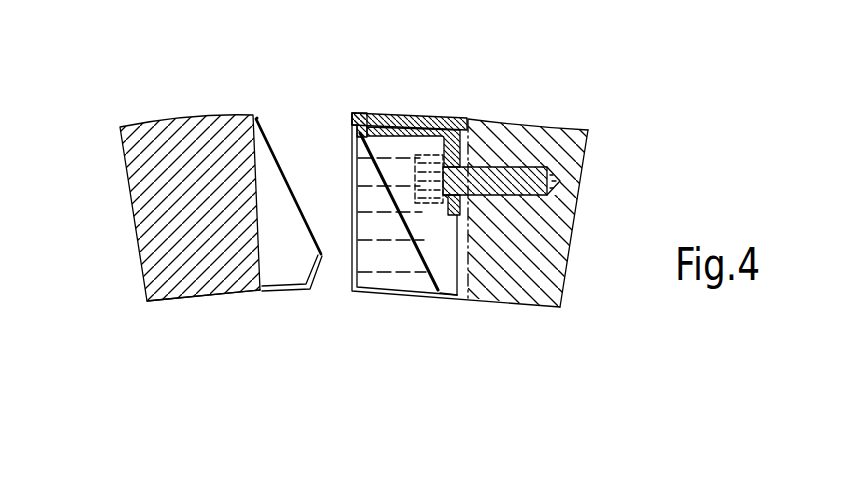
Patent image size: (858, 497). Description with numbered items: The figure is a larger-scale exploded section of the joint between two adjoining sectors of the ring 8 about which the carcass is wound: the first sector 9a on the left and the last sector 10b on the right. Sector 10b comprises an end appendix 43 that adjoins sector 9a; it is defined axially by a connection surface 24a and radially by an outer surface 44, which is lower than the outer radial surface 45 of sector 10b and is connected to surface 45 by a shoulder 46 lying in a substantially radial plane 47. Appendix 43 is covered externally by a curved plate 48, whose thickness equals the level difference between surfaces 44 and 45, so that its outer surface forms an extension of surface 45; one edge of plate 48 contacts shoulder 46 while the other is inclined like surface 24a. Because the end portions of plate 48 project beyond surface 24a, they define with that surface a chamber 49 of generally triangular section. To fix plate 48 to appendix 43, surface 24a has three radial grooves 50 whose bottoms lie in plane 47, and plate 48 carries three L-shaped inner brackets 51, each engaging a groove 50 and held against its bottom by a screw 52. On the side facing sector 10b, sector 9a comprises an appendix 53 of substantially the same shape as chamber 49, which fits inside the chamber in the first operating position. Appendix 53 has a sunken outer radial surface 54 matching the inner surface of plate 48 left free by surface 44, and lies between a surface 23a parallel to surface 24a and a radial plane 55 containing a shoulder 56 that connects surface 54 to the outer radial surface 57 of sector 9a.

The ring 8 is at (583, 232).
The first sector 9a is at (230, 270).
The last sector 10b is at (583, 190).
The surface 23a is at (291, 168).
The connection surface 24a is at (416, 242).
The end appendix 43 is at (447, 300).
The outer surface 44 is at (359, 130).
The outer radial surface 45 is at (567, 126).
The shoulder 46 is at (451, 117).
The radial plane 47 is at (450, 248).
The curved plate 48 is at (403, 116).
The chamber 49 is at (391, 250).
The radial groove 50 is at (458, 226).
The L-shaped inner bracket 51 is at (418, 126).
The screw 52 is at (497, 164).
The appendix 53 is at (263, 176).
The sunken outer radial surface 54 is at (289, 246).
The radial plane 55 is at (264, 228).
The shoulder 56 is at (258, 117).
The outer radial surface 57 is at (160, 117).